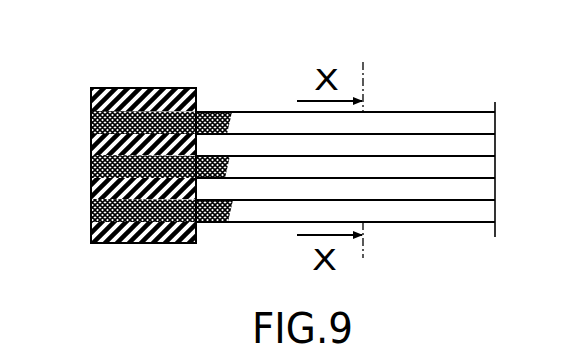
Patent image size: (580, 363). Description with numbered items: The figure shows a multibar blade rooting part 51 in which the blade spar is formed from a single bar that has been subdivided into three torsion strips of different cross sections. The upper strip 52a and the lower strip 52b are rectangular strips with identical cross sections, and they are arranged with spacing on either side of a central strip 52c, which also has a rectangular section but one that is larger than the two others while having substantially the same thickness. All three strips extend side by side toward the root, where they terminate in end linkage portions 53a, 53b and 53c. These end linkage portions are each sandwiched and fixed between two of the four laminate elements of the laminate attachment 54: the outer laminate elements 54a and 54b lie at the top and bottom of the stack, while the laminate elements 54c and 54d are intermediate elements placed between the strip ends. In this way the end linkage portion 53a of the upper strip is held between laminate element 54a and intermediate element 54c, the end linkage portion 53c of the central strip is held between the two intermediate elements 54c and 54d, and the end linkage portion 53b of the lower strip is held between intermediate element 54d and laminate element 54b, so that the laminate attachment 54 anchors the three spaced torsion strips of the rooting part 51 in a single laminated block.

The multibar blade rooting part 51 is at (442, 110).
The upper strip 52a is at (456, 122).
The lower strip 52b is at (428, 212).
The central strip 52c is at (469, 170).
The end linkage portion 53a is at (173, 110).
The end linkage portion 53b is at (160, 236).
The end linkage portion 53c is at (218, 173).
The laminate attachment 54 is at (89, 243).
The laminate element 54a is at (117, 98).
The laminate element 54b is at (114, 232).
The intermediate laminate element 54c is at (110, 146).
The intermediate laminate element 54d is at (110, 191).